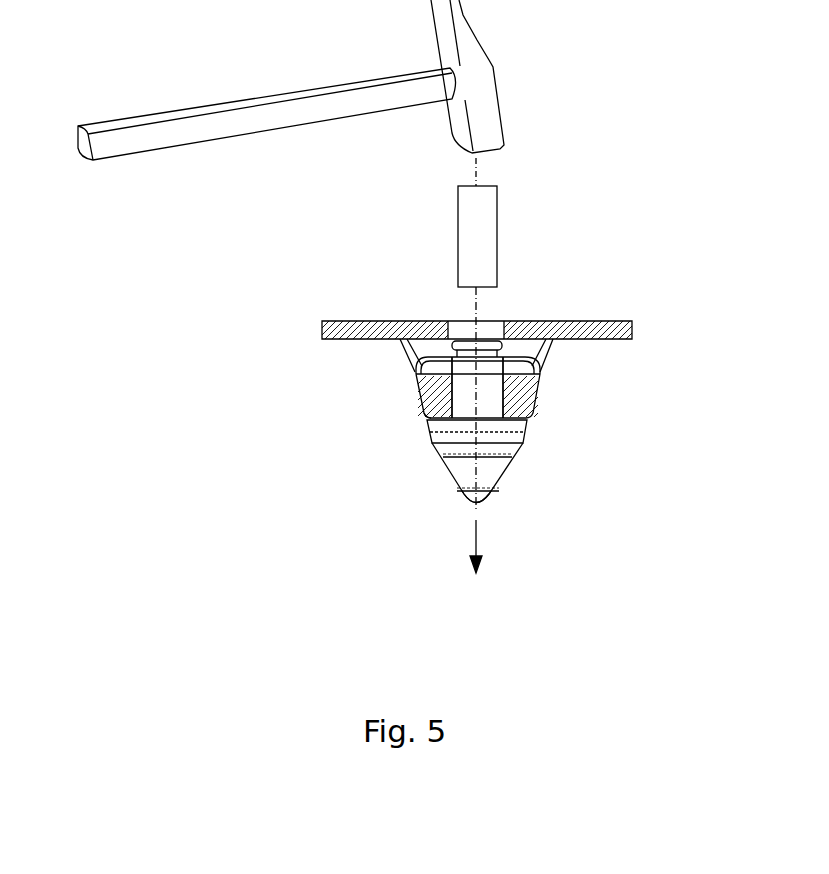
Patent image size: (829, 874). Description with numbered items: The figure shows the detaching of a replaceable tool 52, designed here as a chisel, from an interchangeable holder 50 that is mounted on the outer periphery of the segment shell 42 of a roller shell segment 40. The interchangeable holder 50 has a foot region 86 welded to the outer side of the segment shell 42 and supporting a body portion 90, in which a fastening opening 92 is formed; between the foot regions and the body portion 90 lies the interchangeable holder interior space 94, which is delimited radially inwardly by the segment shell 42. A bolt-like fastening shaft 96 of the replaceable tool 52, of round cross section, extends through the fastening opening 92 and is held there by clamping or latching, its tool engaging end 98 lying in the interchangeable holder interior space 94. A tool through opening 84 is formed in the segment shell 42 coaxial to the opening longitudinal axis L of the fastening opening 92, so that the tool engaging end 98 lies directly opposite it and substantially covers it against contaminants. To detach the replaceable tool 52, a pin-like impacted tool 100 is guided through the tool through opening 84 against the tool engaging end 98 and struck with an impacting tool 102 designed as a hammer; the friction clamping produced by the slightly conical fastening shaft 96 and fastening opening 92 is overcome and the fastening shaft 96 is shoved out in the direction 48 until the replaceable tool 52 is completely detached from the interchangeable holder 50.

The impacting tool 102 is at (281, 92).
The impacted tool 100 is at (482, 195).
The tool engaging end 98 is at (459, 342).
The tool through opening 84 is at (487, 325).
The roller shell segment 40 is at (323, 322).
The segment shell 42 is at (632, 330).
The foot region 86 is at (405, 352).
The interchangeable holder interior space 94 is at (520, 350).
The body portion 90 is at (417, 393).
The fastening opening 92 is at (530, 400).
The interchangeable holder 50 is at (523, 410).
The fastening shaft 96 is at (428, 418).
The replaceable tool 52 is at (455, 478).
The insertion direction 48 is at (543, 528).
The opening longitudinal axis L is at (477, 468).